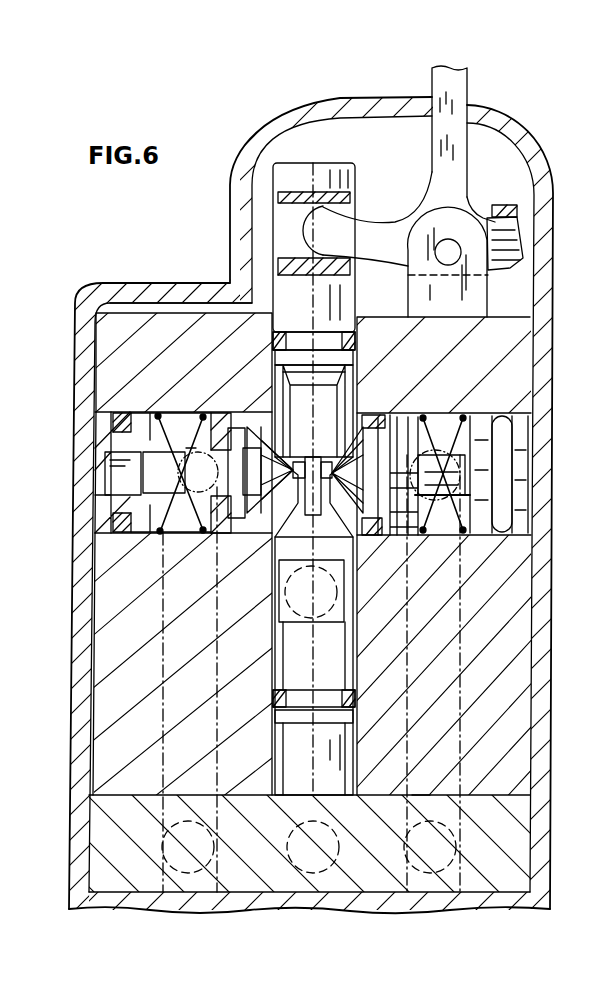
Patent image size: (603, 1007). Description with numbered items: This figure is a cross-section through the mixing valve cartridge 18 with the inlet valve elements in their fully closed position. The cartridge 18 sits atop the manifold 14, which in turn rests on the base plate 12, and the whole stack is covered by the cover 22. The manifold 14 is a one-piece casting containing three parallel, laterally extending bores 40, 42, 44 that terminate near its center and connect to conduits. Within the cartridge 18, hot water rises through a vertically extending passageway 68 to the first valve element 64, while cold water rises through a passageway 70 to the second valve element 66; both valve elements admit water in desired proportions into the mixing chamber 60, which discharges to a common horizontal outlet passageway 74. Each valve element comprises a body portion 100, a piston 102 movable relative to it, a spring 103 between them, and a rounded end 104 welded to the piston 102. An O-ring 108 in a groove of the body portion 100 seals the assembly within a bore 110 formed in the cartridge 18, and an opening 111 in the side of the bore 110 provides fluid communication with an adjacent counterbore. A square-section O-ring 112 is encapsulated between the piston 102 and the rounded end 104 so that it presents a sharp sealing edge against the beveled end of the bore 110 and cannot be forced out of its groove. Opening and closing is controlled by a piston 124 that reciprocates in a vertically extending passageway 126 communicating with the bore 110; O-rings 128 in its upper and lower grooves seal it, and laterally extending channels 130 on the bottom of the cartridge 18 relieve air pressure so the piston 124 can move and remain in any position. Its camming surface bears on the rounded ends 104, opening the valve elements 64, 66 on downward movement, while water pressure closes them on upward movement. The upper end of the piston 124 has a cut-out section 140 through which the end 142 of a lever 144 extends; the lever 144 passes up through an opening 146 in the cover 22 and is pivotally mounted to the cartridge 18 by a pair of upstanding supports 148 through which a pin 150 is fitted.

The base plate 12 is at (522, 900).
The manifold 14 is at (520, 830).
The mixing valve cartridge 18 is at (103, 334).
The cover 22 is at (146, 288).
The bore 40 is at (215, 848).
The bore 42 is at (315, 850).
The bore 44 is at (456, 845).
The mixing chamber 60 is at (360, 380).
The first valve element 64 is at (185, 400).
The second valve element 66 is at (431, 408).
The passageway 68 is at (168, 640).
The passageway 70 is at (450, 642).
The outlet passageway 74 is at (332, 593).
The body portion 100 is at (141, 412).
The piston 102 is at (226, 418).
The spring 103 is at (164, 415).
The rounded end 104 is at (292, 450).
The O-ring 108 is at (130, 535).
The bore 110 is at (195, 534).
The opening 111 is at (184, 439).
The O-ring 112 is at (258, 420).
The piston 124 is at (340, 560).
The passageway 126 is at (348, 410).
The O-rings 128 is at (356, 340).
The channels 130 is at (428, 793).
The cut-out section 140 is at (273, 224).
The end of lever 142 is at (358, 238).
The lever 144 is at (458, 92).
The opening 146 is at (383, 104).
The upstanding supports 148 is at (476, 292).
The pin 150 is at (537, 200).